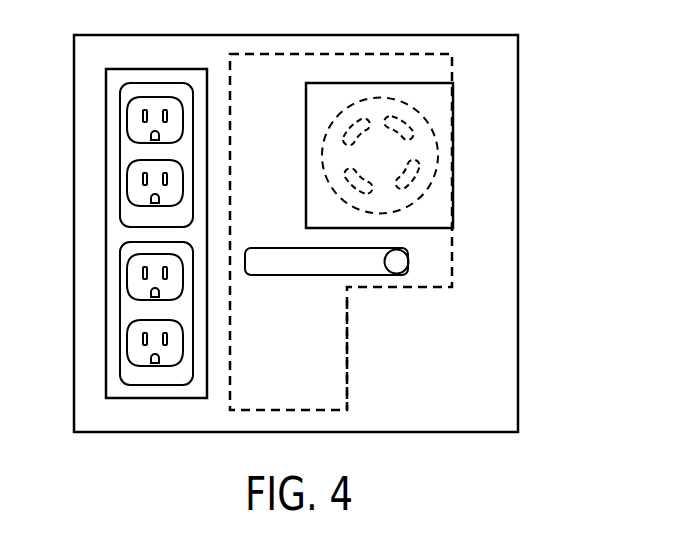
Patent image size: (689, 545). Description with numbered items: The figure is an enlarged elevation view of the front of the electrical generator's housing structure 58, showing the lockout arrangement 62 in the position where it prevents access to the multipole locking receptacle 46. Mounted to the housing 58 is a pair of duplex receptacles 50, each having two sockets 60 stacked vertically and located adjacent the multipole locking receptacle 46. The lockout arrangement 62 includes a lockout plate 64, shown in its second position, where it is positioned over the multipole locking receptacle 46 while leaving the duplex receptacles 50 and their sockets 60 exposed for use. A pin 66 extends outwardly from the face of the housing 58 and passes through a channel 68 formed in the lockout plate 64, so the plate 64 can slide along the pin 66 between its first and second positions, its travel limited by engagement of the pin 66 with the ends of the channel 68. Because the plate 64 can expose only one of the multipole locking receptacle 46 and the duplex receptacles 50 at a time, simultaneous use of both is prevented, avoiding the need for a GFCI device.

The multipole locking receptacle 46 is at (457, 190).
The duplex receptacle 50 is at (110, 153).
The housing structure 58 is at (507, 330).
The sockets 60 is at (184, 120).
The lockout arrangement 62 is at (400, 358).
The lockout plate 64 is at (332, 345).
The pin 66 is at (397, 262).
The channel 68 is at (303, 262).